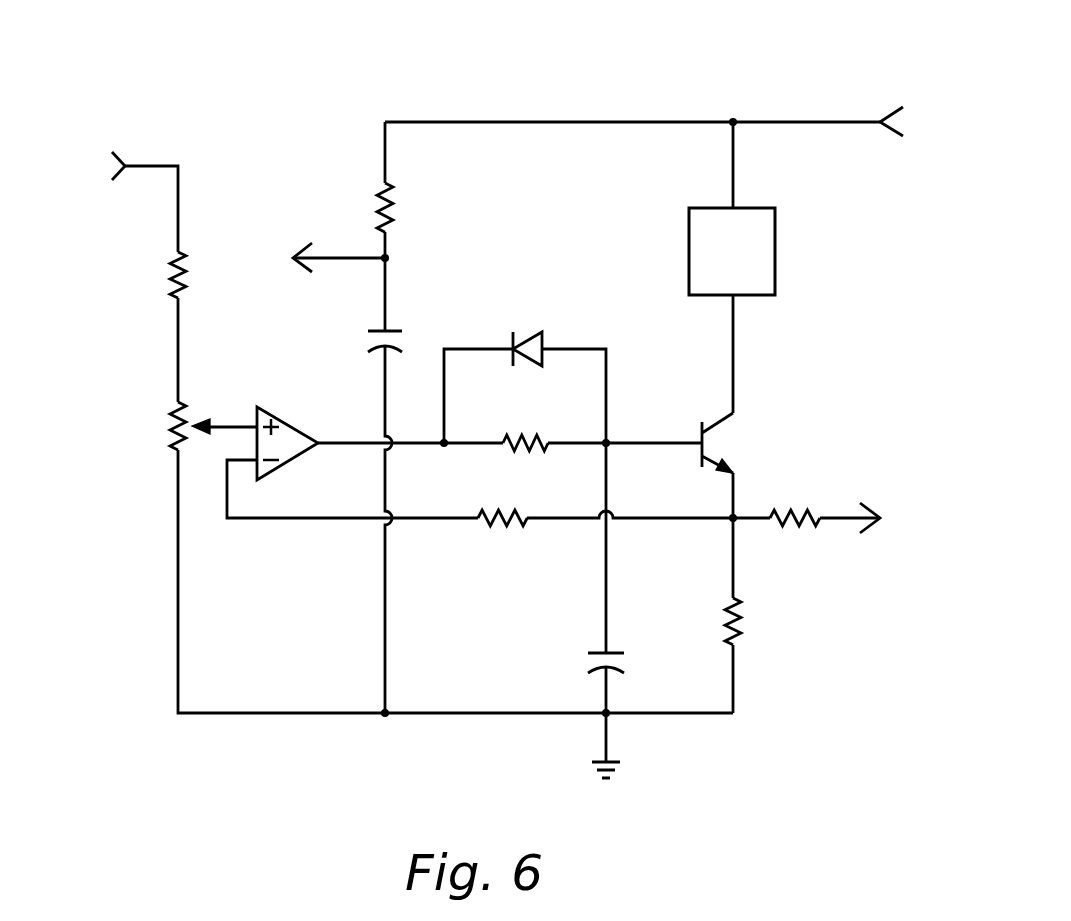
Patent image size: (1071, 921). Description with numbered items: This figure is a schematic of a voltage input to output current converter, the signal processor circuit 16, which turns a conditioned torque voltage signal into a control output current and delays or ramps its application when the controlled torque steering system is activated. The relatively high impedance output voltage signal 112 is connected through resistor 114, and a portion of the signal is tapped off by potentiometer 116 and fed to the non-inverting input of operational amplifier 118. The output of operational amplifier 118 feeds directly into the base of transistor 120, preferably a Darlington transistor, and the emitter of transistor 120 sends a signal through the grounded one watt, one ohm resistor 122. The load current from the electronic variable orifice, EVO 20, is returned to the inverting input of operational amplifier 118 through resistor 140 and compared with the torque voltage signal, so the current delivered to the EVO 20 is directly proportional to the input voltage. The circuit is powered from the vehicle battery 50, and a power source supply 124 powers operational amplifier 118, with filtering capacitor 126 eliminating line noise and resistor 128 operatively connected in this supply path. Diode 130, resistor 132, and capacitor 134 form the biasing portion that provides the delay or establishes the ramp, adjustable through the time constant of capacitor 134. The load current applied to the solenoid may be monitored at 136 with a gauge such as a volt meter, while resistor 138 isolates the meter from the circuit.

The circuit 16 is at (343, 84).
The EVO 20 is at (777, 250).
The vehicle battery 50 is at (885, 112).
The output voltage signal 112 is at (125, 164).
The resistor 114 is at (173, 278).
The potentiometer 116 is at (173, 428).
The operational amplifier 118 is at (282, 418).
The transistor 120 is at (705, 442).
The resistor 122 is at (743, 635).
The power source supply 124 is at (300, 252).
The filtering capacitor 126 is at (368, 333).
The resistor 128 is at (395, 212).
The diode 130 is at (526, 340).
The resistor 132 is at (525, 452).
The capacitor 134 is at (612, 655).
The monitoring point 136 is at (875, 510).
The resistor 138 is at (805, 512).
The resistor 140 is at (503, 525).